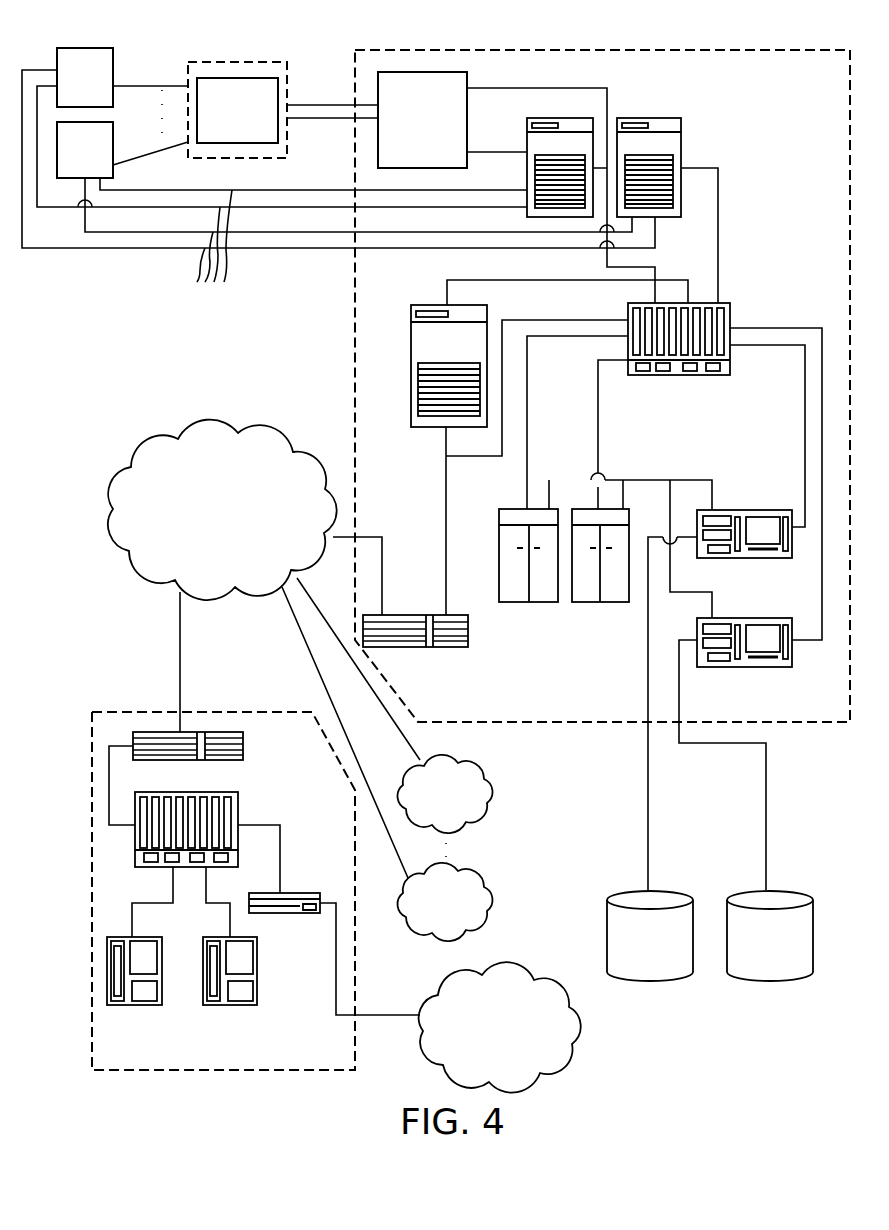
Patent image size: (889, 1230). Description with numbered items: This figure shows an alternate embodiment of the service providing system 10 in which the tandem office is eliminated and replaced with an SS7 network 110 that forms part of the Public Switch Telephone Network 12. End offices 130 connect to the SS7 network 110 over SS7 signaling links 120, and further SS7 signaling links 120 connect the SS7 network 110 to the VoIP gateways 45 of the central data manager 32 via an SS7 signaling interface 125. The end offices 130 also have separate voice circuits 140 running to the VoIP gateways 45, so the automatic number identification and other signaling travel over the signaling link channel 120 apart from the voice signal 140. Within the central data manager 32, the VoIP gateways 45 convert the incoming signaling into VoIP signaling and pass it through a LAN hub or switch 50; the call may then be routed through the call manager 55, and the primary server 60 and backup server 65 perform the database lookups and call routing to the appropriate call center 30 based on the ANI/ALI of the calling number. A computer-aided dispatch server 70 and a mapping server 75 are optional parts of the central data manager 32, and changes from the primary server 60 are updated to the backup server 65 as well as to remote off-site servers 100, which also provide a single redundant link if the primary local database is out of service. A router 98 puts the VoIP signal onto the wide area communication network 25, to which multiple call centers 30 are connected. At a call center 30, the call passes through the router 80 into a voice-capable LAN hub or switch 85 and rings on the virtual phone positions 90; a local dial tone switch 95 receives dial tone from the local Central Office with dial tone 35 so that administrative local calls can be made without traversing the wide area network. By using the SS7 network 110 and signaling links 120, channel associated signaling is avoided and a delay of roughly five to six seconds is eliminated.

The service providing system 10 is at (170, 356).
The communication network 12 is at (278, 62).
The wide area communication network 25 is at (285, 470).
The call center 30 is at (110, 712).
The central data manager 32 is at (796, 50).
The local Central Office with dial tone 35 is at (524, 975).
The VoIP gateway 45 is at (534, 118).
The LAN hub or switch 50 is at (728, 303).
The call manager 55 is at (427, 305).
The primary server 60 is at (768, 558).
The backup server 65 is at (762, 667).
The computer-aided dispatch server 70 is at (520, 602).
The mapping server 75 is at (594, 602).
The router 80 is at (243, 750).
The LAN hub or switch 85 is at (238, 816).
The virtual phone position 90 is at (148, 1005).
The local dial tone switch 95 is at (300, 893).
The router 98 is at (445, 647).
The off-site server 100 is at (662, 890).
The SS7 network 110 is at (250, 143).
The SS7 signaling link 120 is at (135, 84).
The SS7 signaling interface 125 is at (462, 72).
The end office 130 is at (75, 48).
The voice circuit 140 is at (217, 250).